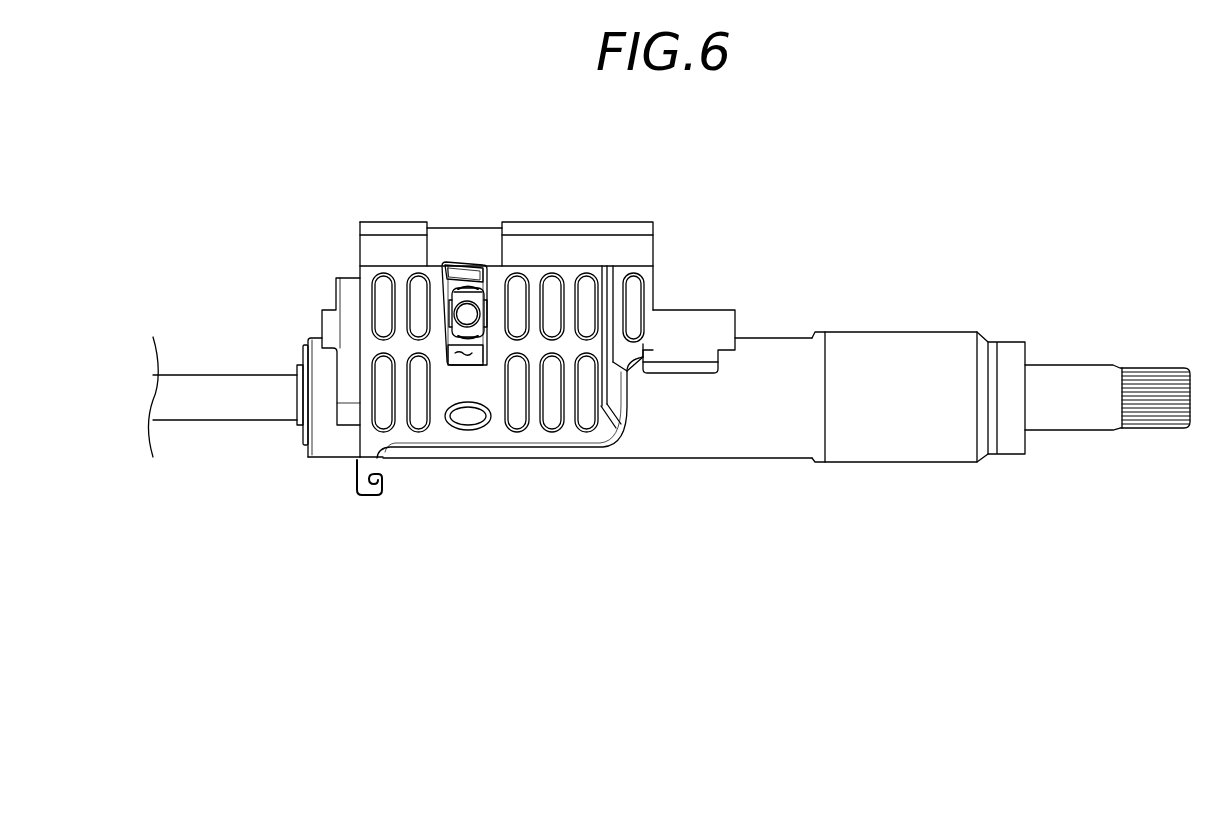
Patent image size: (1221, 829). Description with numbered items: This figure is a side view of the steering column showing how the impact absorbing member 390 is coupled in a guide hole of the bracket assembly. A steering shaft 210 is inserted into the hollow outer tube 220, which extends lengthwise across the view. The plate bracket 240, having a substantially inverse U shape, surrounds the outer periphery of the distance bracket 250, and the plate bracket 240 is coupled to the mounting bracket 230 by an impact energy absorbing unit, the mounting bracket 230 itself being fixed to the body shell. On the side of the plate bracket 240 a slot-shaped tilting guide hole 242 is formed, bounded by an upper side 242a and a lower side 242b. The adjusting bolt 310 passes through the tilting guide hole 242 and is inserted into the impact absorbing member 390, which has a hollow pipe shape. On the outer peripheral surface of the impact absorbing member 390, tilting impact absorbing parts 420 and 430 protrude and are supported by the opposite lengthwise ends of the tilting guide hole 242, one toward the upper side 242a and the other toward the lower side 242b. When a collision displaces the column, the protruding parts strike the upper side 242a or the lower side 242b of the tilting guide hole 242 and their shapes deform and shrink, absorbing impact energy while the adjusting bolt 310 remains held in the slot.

The steering shaft 210 is at (1085, 365).
The outer tube 220 is at (937, 332).
The mounting bracket 230 is at (597, 221).
The plate bracket 240 is at (650, 324).
The distance bracket 250 is at (697, 310).
The tilting guide hole 242 is at (460, 363).
The upper side of the tilting guide hole 242a is at (437, 267).
The lower side of the tilting guide hole 242b is at (468, 358).
The adjusting bolt 310 is at (456, 310).
The impact absorbing member 390 is at (448, 337).
The tilting impact absorbing part 420 is at (469, 291).
The tilting impact absorbing part 430 is at (469, 360).